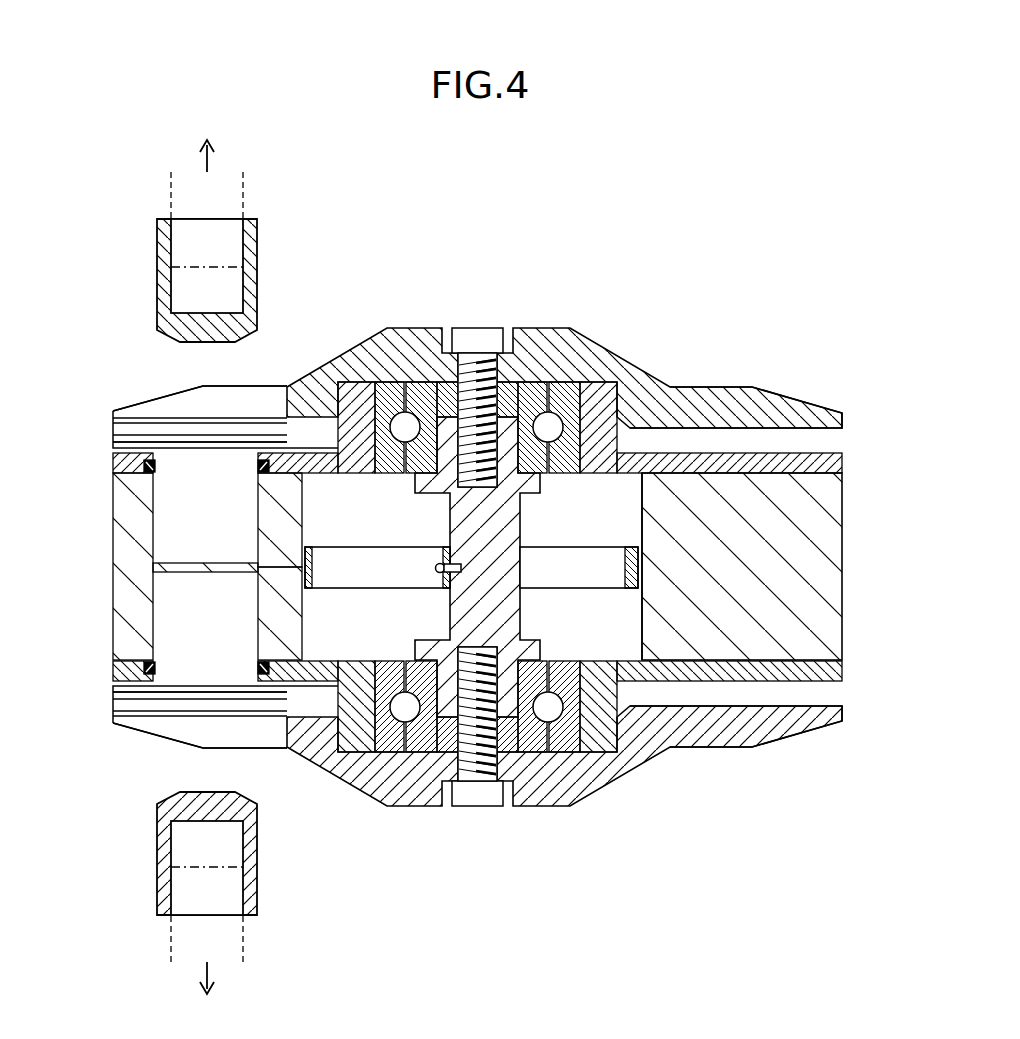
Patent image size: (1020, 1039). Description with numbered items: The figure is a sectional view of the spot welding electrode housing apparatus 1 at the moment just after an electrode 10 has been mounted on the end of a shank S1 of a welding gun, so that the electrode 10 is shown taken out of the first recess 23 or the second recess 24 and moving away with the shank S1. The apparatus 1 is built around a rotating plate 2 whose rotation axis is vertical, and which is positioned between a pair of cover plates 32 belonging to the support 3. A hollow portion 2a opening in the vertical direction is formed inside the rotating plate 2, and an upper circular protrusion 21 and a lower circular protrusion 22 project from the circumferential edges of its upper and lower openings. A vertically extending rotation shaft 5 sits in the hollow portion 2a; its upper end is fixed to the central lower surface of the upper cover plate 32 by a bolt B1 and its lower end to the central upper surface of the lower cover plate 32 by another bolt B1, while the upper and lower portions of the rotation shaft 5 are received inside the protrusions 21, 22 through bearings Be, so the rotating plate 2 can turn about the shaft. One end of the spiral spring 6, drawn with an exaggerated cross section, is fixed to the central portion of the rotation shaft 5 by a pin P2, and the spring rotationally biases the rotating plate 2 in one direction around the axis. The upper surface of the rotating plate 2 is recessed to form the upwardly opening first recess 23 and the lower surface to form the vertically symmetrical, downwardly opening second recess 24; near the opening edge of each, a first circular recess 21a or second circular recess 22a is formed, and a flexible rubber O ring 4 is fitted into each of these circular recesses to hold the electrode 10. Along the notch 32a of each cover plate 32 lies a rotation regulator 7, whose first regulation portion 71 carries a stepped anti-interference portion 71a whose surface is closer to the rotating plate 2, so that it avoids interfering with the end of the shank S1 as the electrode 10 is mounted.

The spot welding electrode housing apparatus 1 is at (804, 257).
The rotating plate 2 is at (850, 583).
The hollow portion 2a is at (639, 640).
The support 3 is at (477, 562).
The O ring 4 is at (152, 458).
The rotation shaft 5 is at (522, 525).
The spiral spring 6 is at (398, 546).
The rotation regulator 7 is at (186, 571).
The electrode 10 is at (258, 258).
The upper circular protrusion 21 is at (622, 398).
The first circular recess 21a is at (148, 470).
The lower circular protrusion 22 is at (620, 727).
The second circular recess 22a is at (148, 665).
The first recess 23 is at (256, 512).
The second recess 24 is at (256, 636).
The cover plate 32 is at (745, 387).
The notch 32a is at (237, 418).
The first regulation portion 71 is at (147, 433).
The anti-interference portion 71a is at (140, 437).
The bolt B1 is at (476, 334).
The bearing Be is at (565, 382).
The pin P2 is at (436, 568).
The shank S1 is at (247, 186).